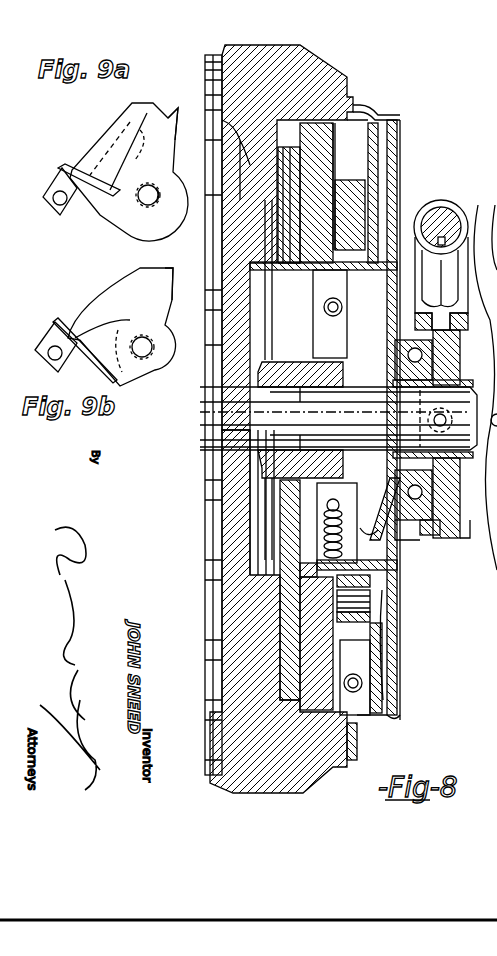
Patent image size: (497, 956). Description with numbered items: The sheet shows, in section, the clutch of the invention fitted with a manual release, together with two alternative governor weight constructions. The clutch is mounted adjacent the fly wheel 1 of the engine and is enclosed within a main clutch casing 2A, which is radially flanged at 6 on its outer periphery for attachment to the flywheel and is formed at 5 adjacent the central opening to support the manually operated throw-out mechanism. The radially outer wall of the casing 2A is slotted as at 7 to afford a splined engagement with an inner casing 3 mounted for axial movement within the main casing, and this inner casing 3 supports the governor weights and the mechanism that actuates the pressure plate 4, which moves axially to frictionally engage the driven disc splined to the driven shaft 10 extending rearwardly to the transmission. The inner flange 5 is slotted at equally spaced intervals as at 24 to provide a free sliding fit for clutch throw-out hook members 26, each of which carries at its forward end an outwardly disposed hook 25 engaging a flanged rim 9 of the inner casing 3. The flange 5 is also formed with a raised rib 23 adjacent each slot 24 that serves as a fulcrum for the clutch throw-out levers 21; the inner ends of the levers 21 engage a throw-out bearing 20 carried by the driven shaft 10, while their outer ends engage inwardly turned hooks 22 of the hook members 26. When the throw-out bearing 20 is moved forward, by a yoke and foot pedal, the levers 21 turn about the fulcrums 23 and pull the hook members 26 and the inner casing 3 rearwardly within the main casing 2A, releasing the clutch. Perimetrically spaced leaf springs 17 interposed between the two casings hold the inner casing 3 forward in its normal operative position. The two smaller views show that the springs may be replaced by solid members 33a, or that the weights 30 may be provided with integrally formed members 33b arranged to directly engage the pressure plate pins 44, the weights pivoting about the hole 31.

In FIG. 8, the fly wheel 1 is at (267, 682).
In FIG. 8, the clutch casing 2A is at (388, 690).
In FIG. 8, the inner casing 3 is at (375, 677).
In FIG. 8, the pressure plate 4 is at (317, 617).
In FIG. 8, the inner flange 5 is at (373, 552).
In FIG. 8, the radial flange 6 is at (357, 744).
In FIG. 8, the slot 7 is at (387, 720).
In FIG. 8, the flanged rim 9 is at (318, 578).
In FIG. 8, the driven shaft 10 is at (258, 400).
In FIG. 8, the leaf springs 17 is at (380, 667).
In FIG. 8, the throw-out bearing 20 is at (412, 316).
In FIG. 8, the clutch throw-out levers 21 is at (380, 500).
In FIG. 8, the inwardly turned hooks 22 is at (330, 563).
In FIG. 8, the raised rib 23 is at (363, 536).
In FIG. 8, the slots 24 is at (383, 585).
In FIG. 8, the outwardly disposed hook 25 is at (318, 570).
In FIG. 8, the clutch throw-out hook members 26 is at (383, 597).
In FIG. 9a, the weights 30 is at (167, 112).
In FIG. 9b, the weights 30 is at (160, 275).
In FIG. 9a, the pivot hole 31 is at (160, 198).
In FIG. 9b, the pivot hole 31 is at (155, 343).
In FIG. 9a, the solid members 33a is at (112, 137).
In FIG. 9b, the integrally formed members 33b is at (78, 320).
In FIG. 9a, the pressure plate pins 44 is at (52, 185).
In FIG. 9b, the pressure plate pins 44 is at (45, 363).